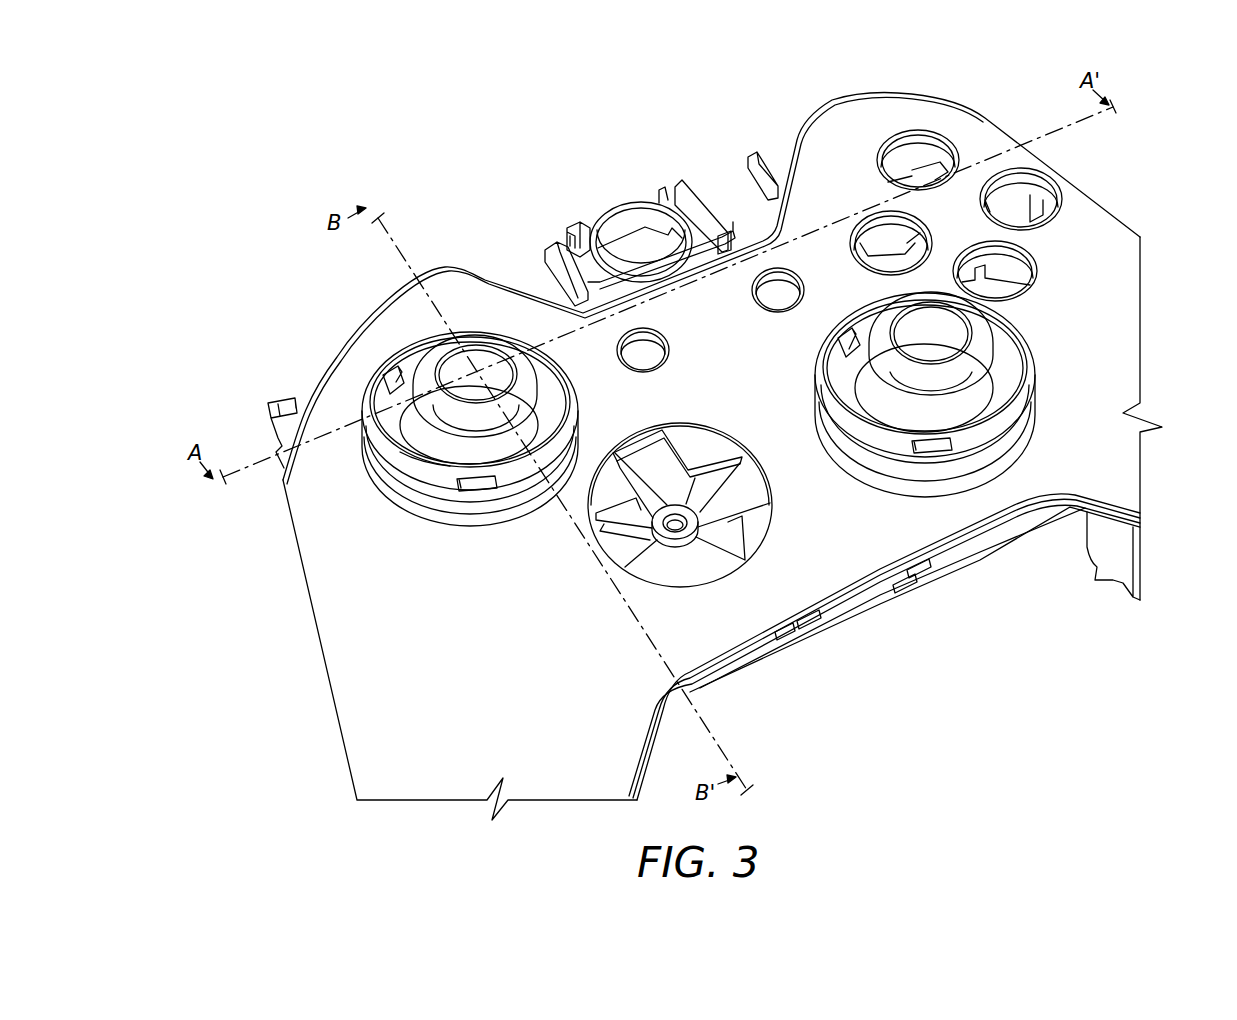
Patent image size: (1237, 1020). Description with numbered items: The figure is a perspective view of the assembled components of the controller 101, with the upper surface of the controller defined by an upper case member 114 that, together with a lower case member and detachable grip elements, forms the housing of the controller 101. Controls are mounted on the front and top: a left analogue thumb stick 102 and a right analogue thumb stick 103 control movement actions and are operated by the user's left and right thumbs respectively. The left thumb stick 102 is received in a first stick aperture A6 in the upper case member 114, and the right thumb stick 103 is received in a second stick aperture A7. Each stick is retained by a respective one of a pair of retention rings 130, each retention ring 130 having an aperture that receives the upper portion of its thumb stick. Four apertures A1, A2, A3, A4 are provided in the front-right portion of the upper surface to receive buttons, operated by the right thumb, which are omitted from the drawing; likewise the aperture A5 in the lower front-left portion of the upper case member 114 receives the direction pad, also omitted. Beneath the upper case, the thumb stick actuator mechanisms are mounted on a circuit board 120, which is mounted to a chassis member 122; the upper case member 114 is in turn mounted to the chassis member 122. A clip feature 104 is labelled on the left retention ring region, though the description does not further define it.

The controller 101 is at (489, 130).
The left analogue thumb stick 102 is at (482, 350).
The right analogue thumb stick 103 is at (950, 340).
The retention clip 104 is at (387, 373).
The upper case member 114 is at (1117, 297).
The circuit board 120 is at (737, 213).
The chassis member 122 is at (630, 208).
The retention ring 130 is at (393, 437).
The aperture A1 is at (930, 153).
The aperture A2 is at (1030, 200).
The aperture A3 is at (877, 233).
The aperture A4 is at (1015, 273).
The aperture A5 is at (717, 563).
The first stick aperture A6 is at (425, 467).
The second stick aperture A7 is at (933, 452).